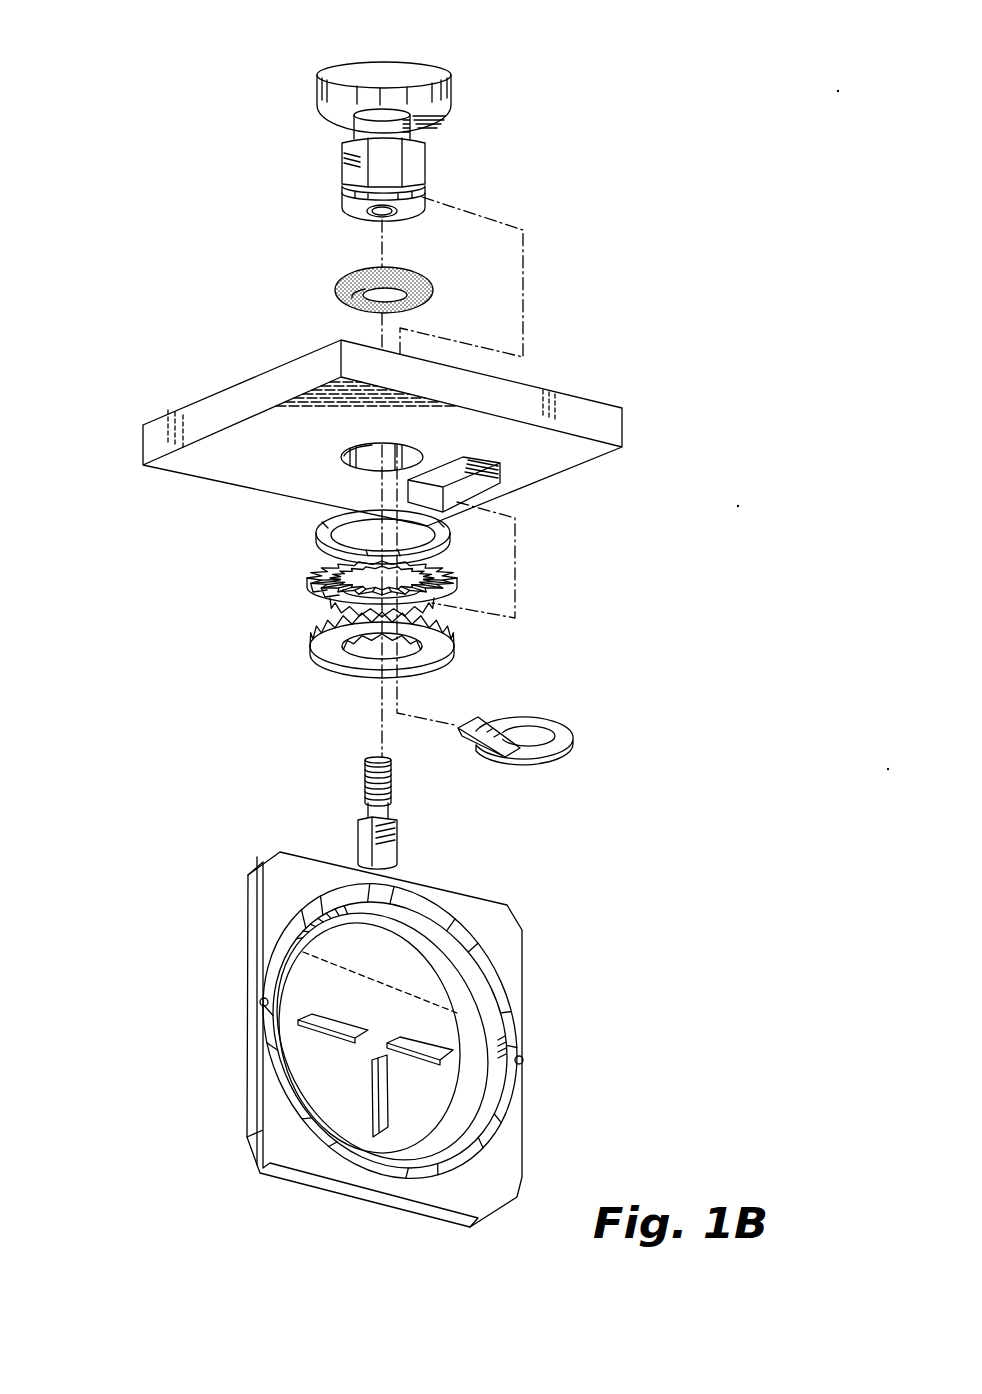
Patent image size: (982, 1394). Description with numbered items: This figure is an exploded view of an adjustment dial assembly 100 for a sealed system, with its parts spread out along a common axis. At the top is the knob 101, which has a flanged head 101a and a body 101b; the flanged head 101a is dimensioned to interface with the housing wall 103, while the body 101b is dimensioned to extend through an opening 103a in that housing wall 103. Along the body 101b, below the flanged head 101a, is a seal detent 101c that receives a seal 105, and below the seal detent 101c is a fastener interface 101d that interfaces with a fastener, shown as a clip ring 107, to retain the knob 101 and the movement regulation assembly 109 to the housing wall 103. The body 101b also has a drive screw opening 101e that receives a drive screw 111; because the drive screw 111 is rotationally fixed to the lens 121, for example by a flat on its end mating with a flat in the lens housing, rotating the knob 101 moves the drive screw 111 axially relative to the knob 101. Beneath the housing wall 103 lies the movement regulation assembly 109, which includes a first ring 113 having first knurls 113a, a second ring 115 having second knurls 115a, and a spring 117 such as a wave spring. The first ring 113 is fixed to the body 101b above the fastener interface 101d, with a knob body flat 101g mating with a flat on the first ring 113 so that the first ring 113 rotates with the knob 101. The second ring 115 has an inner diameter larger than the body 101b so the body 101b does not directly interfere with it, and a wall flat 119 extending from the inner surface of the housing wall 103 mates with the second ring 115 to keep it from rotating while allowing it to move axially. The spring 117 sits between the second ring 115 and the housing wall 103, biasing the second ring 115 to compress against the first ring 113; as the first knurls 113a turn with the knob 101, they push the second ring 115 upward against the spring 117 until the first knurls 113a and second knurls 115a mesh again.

The adjustment dial assembly 100 is at (132, 190).
The knob 101 is at (313, 98).
The flanged head 101a is at (387, 77).
The body 101b is at (410, 157).
The seal detent 101c is at (400, 123).
The fastener interface 101d is at (422, 184).
The drive screw opening 101e is at (383, 213).
The knob body flat 101g is at (343, 163).
The housing wall 103 is at (218, 403).
The opening 103a is at (350, 450).
The seal 105 is at (435, 284).
The clip ring 107 is at (567, 758).
The movement regulation assembly 109 is at (468, 630).
The drive screw 111 is at (367, 800).
The first ring 113 is at (313, 653).
The first knurls 113a is at (315, 628).
The second ring 115 is at (450, 577).
The second knurls 115a is at (310, 600).
The spring 117 is at (310, 527).
The wall flat 119 is at (450, 470).
The lens 121 is at (472, 915).